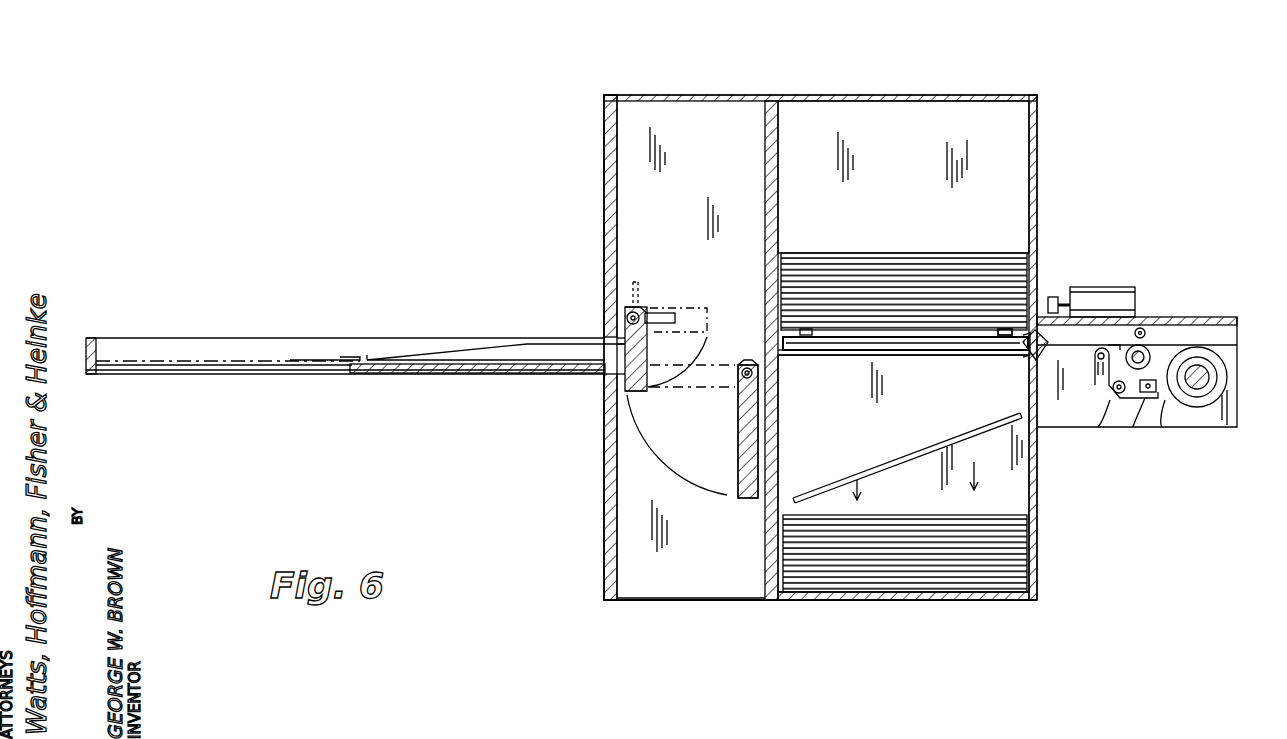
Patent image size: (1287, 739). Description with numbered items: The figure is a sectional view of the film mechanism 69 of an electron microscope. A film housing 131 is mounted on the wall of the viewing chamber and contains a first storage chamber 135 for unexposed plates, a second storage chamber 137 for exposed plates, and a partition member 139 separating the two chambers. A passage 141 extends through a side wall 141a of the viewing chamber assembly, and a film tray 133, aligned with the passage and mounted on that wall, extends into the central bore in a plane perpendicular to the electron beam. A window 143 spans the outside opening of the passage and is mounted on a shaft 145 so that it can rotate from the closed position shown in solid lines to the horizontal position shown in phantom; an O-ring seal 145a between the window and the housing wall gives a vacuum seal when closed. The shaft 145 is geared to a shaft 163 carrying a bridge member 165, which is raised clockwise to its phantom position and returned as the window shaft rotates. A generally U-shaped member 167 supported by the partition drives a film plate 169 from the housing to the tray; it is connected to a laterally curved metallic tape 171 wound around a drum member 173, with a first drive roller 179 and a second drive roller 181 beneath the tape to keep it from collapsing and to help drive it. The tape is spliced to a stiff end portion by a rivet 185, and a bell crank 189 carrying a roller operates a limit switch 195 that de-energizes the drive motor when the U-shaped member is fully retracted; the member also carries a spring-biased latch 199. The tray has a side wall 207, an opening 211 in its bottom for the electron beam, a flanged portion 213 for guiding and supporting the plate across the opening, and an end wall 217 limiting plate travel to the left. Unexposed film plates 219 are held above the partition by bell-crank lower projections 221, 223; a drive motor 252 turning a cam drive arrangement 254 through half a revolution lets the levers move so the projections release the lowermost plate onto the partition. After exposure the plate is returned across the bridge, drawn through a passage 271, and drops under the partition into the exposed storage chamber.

The film mechanism 69 is at (1024, 614).
The film housing 131 is at (1033, 180).
The film tray 133 is at (340, 373).
The first storage chamber 135 is at (1010, 150).
The second storage chamber 137 is at (1008, 500).
The partition member 139 is at (893, 345).
The passage 141 is at (618, 312).
The side wall 141a is at (604, 184).
The window 143 is at (627, 396).
The shaft 145 is at (637, 316).
The O-ring seal 145a is at (625, 380).
The shaft 163 is at (748, 368).
The bridge member 165 is at (752, 498).
The U-shaped member 167 is at (1045, 365).
The film plate 169 is at (890, 350).
The metallic tape 171 is at (1163, 325).
The drum member 173 is at (1196, 408).
The first drive roller 179 is at (1142, 348).
The second drive roller 181 is at (1143, 328).
The rivet 185 is at (1100, 400).
The bell crank 189 is at (1135, 402).
The limit switch 195 is at (1150, 400).
The latch 199 is at (313, 356).
The side wall 207 is at (204, 362).
The opening 211 is at (218, 376).
The flanged portion 213 is at (533, 350).
The end wall 217 is at (86, 356).
The unexposed film plates 219 is at (990, 253).
The lower projection 221 is at (1005, 335).
The lower projection 223 is at (781, 336).
The drive motor 252 is at (1100, 288).
The cam drive arrangement 254 is at (1050, 296).
The passage 271 is at (779, 372).